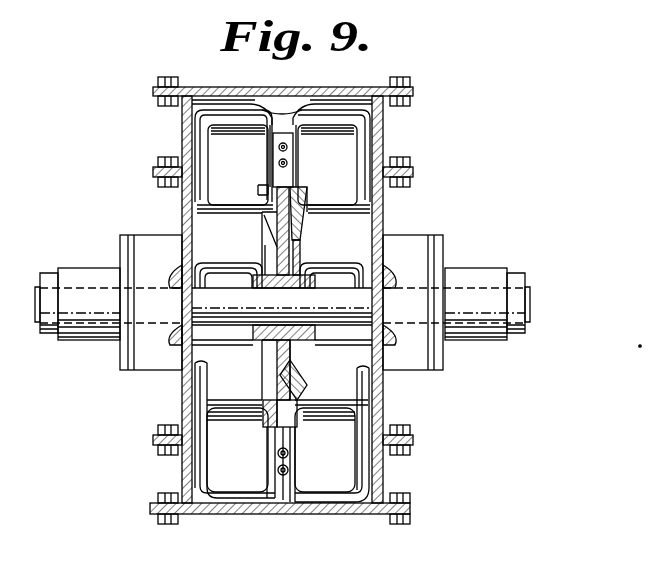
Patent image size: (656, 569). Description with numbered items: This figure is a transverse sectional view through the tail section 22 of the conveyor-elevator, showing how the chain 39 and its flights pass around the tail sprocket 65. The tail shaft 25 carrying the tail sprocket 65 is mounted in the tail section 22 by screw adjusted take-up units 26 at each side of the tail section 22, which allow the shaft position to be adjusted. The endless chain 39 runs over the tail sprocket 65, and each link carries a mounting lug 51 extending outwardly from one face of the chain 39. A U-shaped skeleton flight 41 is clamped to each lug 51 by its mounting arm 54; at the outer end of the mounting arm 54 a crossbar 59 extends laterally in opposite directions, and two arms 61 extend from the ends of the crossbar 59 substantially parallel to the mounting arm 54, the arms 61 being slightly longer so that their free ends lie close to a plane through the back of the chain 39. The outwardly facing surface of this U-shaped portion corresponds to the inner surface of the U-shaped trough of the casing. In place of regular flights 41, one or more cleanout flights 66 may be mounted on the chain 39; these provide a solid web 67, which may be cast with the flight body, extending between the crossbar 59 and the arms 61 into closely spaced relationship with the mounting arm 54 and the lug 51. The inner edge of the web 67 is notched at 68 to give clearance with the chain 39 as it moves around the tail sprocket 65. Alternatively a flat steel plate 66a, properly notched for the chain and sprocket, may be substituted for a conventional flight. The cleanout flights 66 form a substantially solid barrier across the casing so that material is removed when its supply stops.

The tail section 22 is at (184, 87).
The tail shaft 25 is at (226, 327).
The screw adjusted take-up units 26 is at (150, 232).
The chain 39 is at (300, 386).
The flights 41 is at (335, 265).
The mounting lug 51 is at (294, 152).
The mounting arm 54 is at (271, 447).
The crossbar 59 is at (232, 128).
The arms 61 is at (206, 169).
The tail sprocket 65 is at (292, 362).
The cleanout flights 66 is at (338, 112).
The flat steel plate 66a is at (260, 180).
The web 67 is at (229, 205).
The notch 68 is at (312, 195).